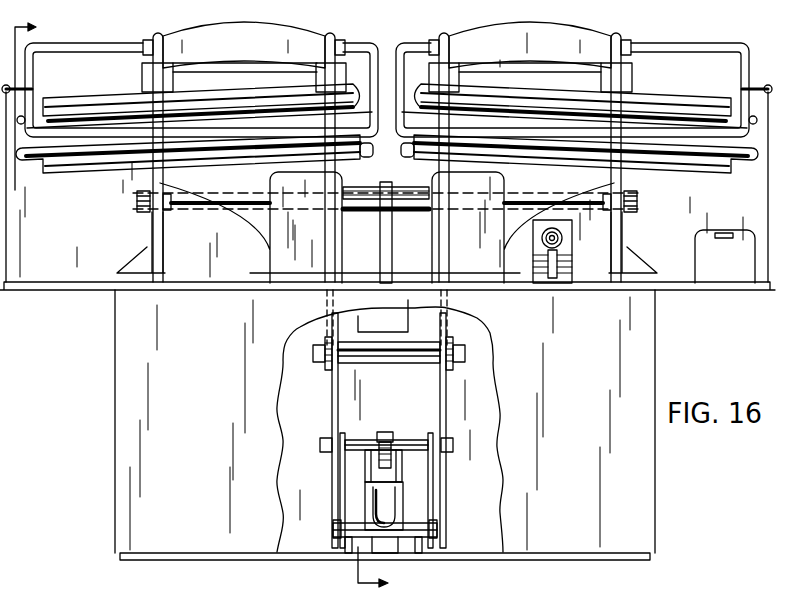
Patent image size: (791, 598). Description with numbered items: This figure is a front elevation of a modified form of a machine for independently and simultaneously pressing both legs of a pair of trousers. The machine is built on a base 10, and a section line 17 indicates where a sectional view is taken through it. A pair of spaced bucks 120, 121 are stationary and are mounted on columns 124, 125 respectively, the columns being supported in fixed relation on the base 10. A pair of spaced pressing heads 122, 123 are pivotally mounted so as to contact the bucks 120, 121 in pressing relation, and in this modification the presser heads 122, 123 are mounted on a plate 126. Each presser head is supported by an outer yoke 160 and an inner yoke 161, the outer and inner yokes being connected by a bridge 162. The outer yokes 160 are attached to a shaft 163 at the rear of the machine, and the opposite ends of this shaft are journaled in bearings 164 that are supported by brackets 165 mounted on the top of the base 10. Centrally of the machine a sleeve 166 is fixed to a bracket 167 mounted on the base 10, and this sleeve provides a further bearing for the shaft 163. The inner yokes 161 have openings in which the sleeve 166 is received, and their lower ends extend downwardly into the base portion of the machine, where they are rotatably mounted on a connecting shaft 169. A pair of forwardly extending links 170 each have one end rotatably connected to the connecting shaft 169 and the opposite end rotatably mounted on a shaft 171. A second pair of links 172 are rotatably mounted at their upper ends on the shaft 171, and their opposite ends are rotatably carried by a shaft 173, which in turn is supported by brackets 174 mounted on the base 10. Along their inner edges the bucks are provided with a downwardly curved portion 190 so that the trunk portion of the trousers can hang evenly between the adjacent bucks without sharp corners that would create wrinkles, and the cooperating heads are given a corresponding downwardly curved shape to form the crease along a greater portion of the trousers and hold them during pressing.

The base 10 is at (113, 405).
The section line 17- 17 is at (212, 304).
The buck 120 is at (95, 172).
The buck 121 is at (697, 173).
The pressing head 122 is at (93, 103).
The pressing head 123 is at (680, 108).
The column 124 is at (287, 240).
The column 125 is at (487, 260).
The plate 126 is at (283, 74).
The outer yoke 160 is at (163, 34).
The inner yoke 161 is at (317, 40).
The bridge 162 is at (225, 30).
The shaft 163 is at (181, 210).
The bearing 164 is at (137, 208).
The bracket 165 is at (153, 262).
The sleeve 166 is at (355, 275).
The bracket 167 is at (412, 275).
The connecting shaft 169 is at (374, 358).
The forwardly extending link 170 is at (334, 398).
The shaft 171 is at (407, 436).
The link 172 is at (340, 483).
The shaft 173 is at (405, 530).
The bracket 174 is at (347, 548).
The downwardly curved portion 190 is at (405, 143).